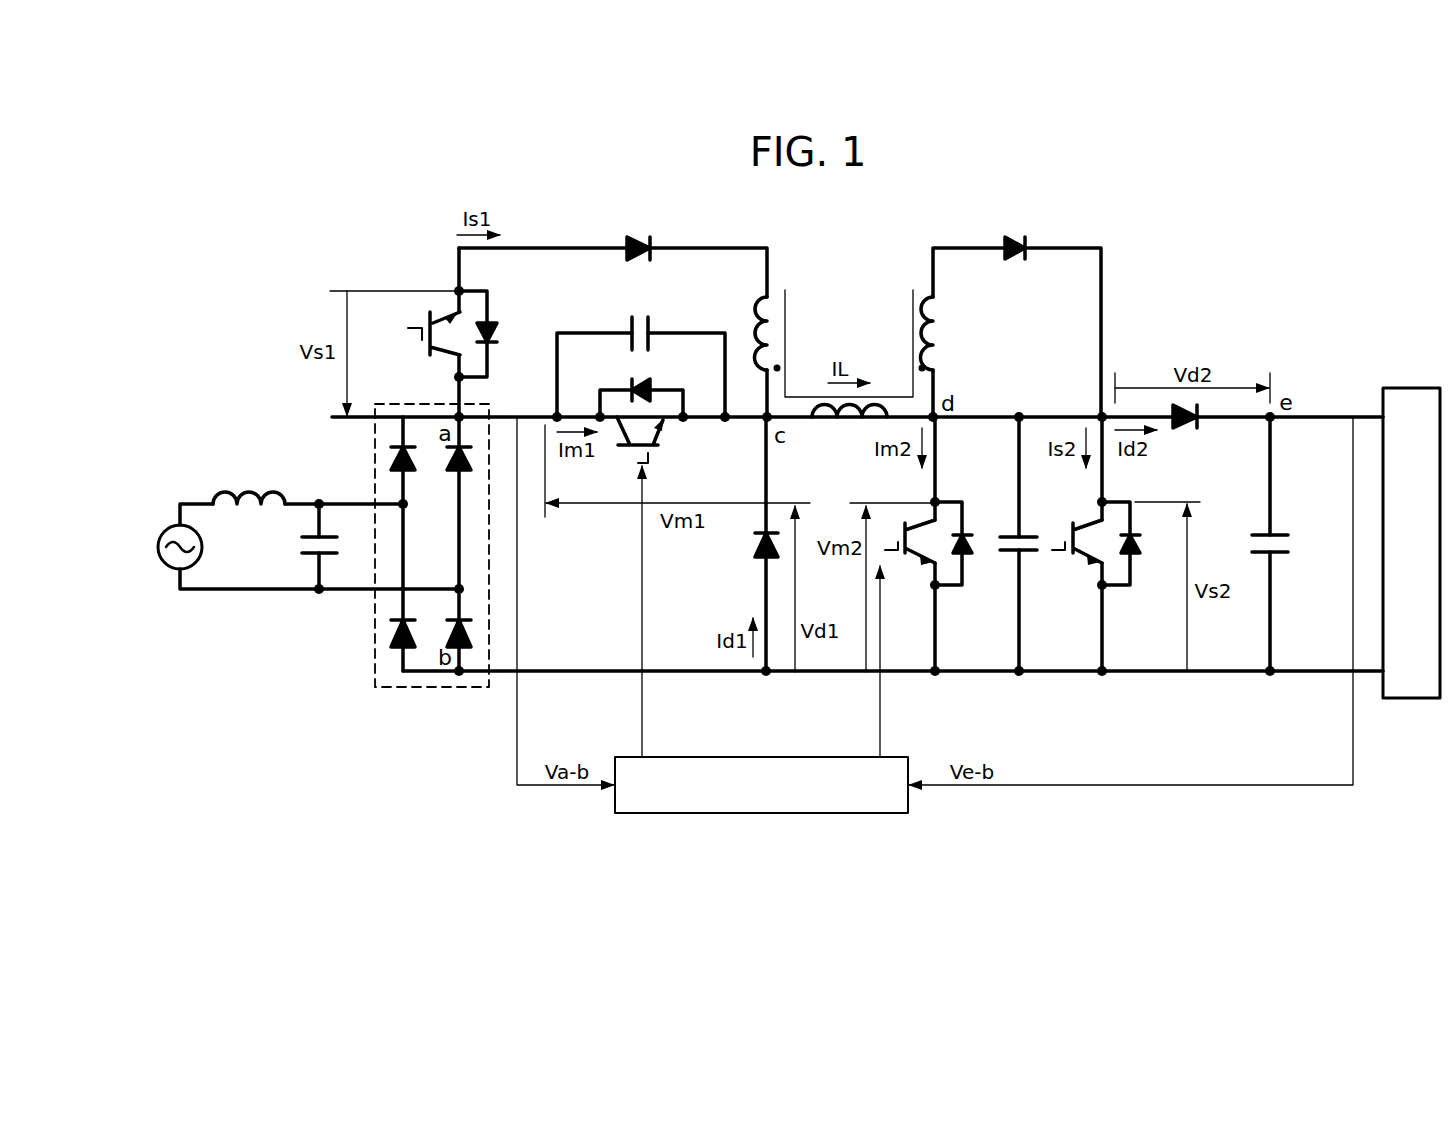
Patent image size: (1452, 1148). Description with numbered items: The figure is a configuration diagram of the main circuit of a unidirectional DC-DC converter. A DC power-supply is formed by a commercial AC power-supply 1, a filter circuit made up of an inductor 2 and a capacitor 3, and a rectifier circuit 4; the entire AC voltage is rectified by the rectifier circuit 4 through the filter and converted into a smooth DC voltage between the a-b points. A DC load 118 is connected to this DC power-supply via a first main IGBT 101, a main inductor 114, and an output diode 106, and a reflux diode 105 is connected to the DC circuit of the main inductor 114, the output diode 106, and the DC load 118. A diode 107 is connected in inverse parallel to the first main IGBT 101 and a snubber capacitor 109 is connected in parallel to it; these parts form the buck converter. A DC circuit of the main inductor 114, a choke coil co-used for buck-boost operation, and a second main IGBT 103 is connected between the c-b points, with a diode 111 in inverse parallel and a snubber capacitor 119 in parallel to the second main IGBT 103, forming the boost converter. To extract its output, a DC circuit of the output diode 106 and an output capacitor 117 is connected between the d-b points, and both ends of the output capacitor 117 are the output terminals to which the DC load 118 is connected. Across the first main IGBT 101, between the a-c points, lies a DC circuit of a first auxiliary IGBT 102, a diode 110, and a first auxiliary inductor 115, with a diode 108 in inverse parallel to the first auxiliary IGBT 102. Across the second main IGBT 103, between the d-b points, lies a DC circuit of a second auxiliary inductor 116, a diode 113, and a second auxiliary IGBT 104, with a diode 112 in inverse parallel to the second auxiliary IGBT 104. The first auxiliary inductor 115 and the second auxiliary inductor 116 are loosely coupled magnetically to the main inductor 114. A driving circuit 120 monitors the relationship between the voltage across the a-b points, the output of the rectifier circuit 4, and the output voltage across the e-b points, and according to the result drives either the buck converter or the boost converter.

The commercial AC power-supply 1 is at (158, 547).
The inductor 2 is at (260, 487).
The capacitor 3 is at (302, 547).
The rectifier circuit 4 is at (375, 655).
The first main IGBT 101 is at (660, 453).
The first auxiliary IGBT 102 is at (423, 353).
The second main IGBT 103 is at (903, 565).
The second auxiliary IGBT 104 is at (1070, 565).
The reflux diode 105 is at (755, 560).
The output diode 106 is at (1190, 427).
The diode 107 is at (650, 383).
The diode 108 is at (493, 327).
The snubber capacitor 109 is at (640, 317).
The diode 110 is at (633, 237).
The diode 111 is at (973, 547).
The diode 112 is at (1142, 547).
The diode 113 is at (1013, 237).
The main inductor 114 is at (848, 433).
The first auxiliary inductor 115 is at (753, 318).
The second auxiliary inductor 116 is at (940, 325).
The output capacitor 117 is at (1283, 527).
The DC load 118 is at (1408, 387).
The snubber capacitor 119 is at (1007, 533).
The driving circuit 120 is at (760, 815).